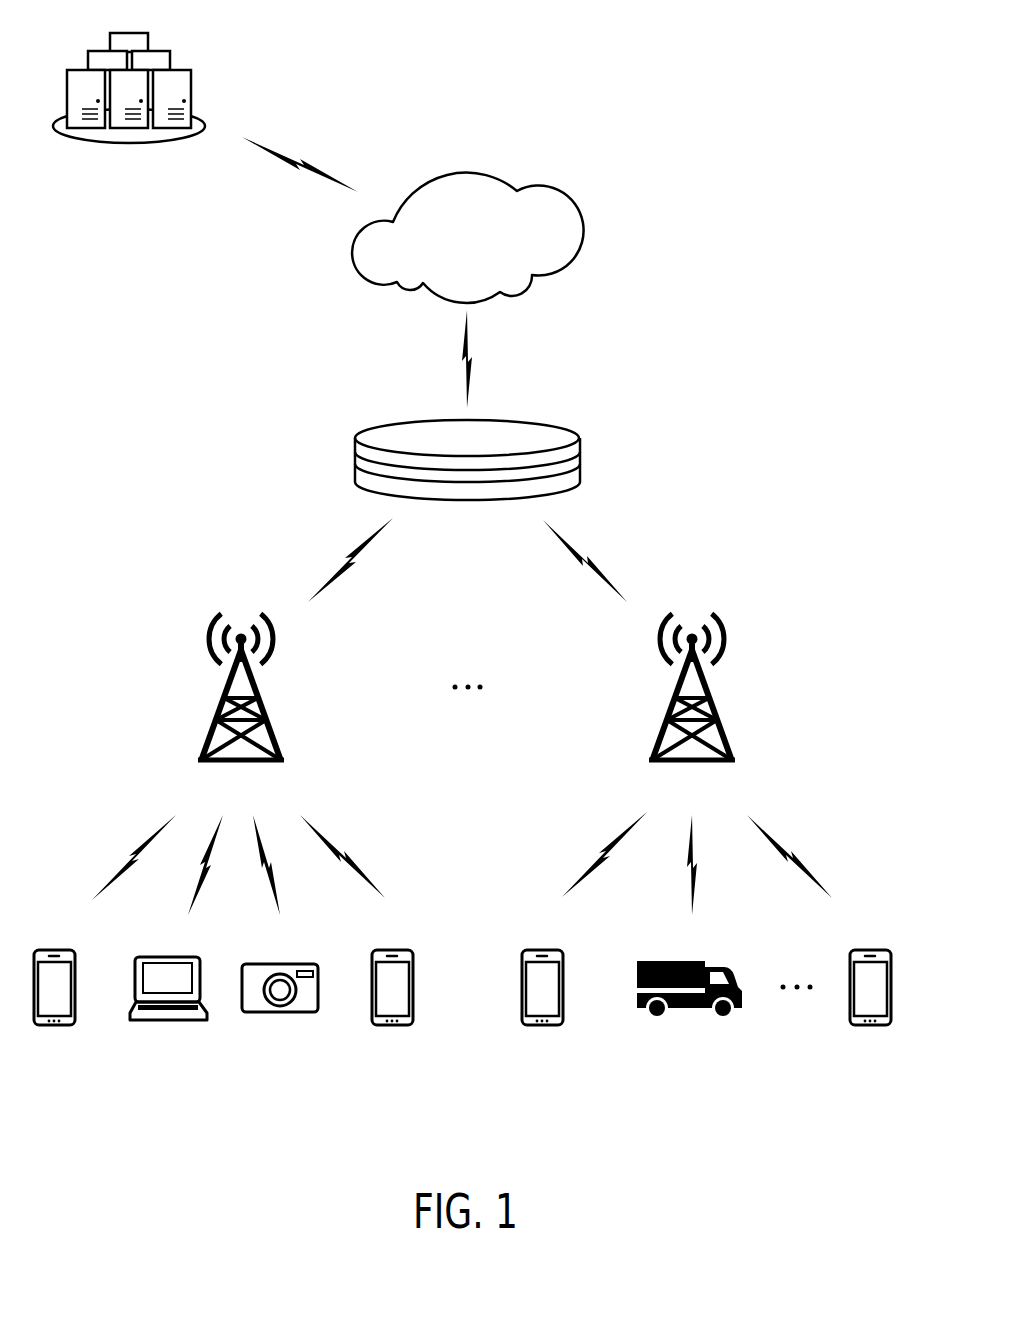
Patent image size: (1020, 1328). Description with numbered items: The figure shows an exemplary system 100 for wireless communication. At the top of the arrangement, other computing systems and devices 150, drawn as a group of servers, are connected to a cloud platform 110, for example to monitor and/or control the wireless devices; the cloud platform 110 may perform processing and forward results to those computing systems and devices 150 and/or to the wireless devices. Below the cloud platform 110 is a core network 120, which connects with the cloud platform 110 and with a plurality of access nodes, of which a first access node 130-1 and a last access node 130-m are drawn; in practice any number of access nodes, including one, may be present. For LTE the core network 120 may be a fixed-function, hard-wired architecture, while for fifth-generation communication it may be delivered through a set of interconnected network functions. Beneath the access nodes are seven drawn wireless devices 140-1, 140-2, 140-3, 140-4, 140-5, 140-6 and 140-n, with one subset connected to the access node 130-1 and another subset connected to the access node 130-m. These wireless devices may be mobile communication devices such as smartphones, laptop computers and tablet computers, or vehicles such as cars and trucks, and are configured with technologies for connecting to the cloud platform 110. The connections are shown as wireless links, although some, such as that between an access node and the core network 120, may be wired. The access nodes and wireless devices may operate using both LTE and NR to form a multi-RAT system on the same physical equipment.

The system 100 is at (726, 93).
The cloud platform 110 is at (580, 235).
The core network 120 is at (580, 444).
The access node 130-1 is at (270, 708).
The access node 130-m is at (722, 708).
The wireless device 140-1 is at (53, 1026).
The wireless device 140-2 is at (177, 1020).
The wireless device 140-3 is at (282, 1012).
The wireless device 140-4 is at (395, 1026).
The wireless device 140-5 is at (545, 1026).
The wireless device 140-6 is at (665, 1015).
The wireless device 140-n is at (875, 1026).
The computing systems and devices 150 is at (172, 60).